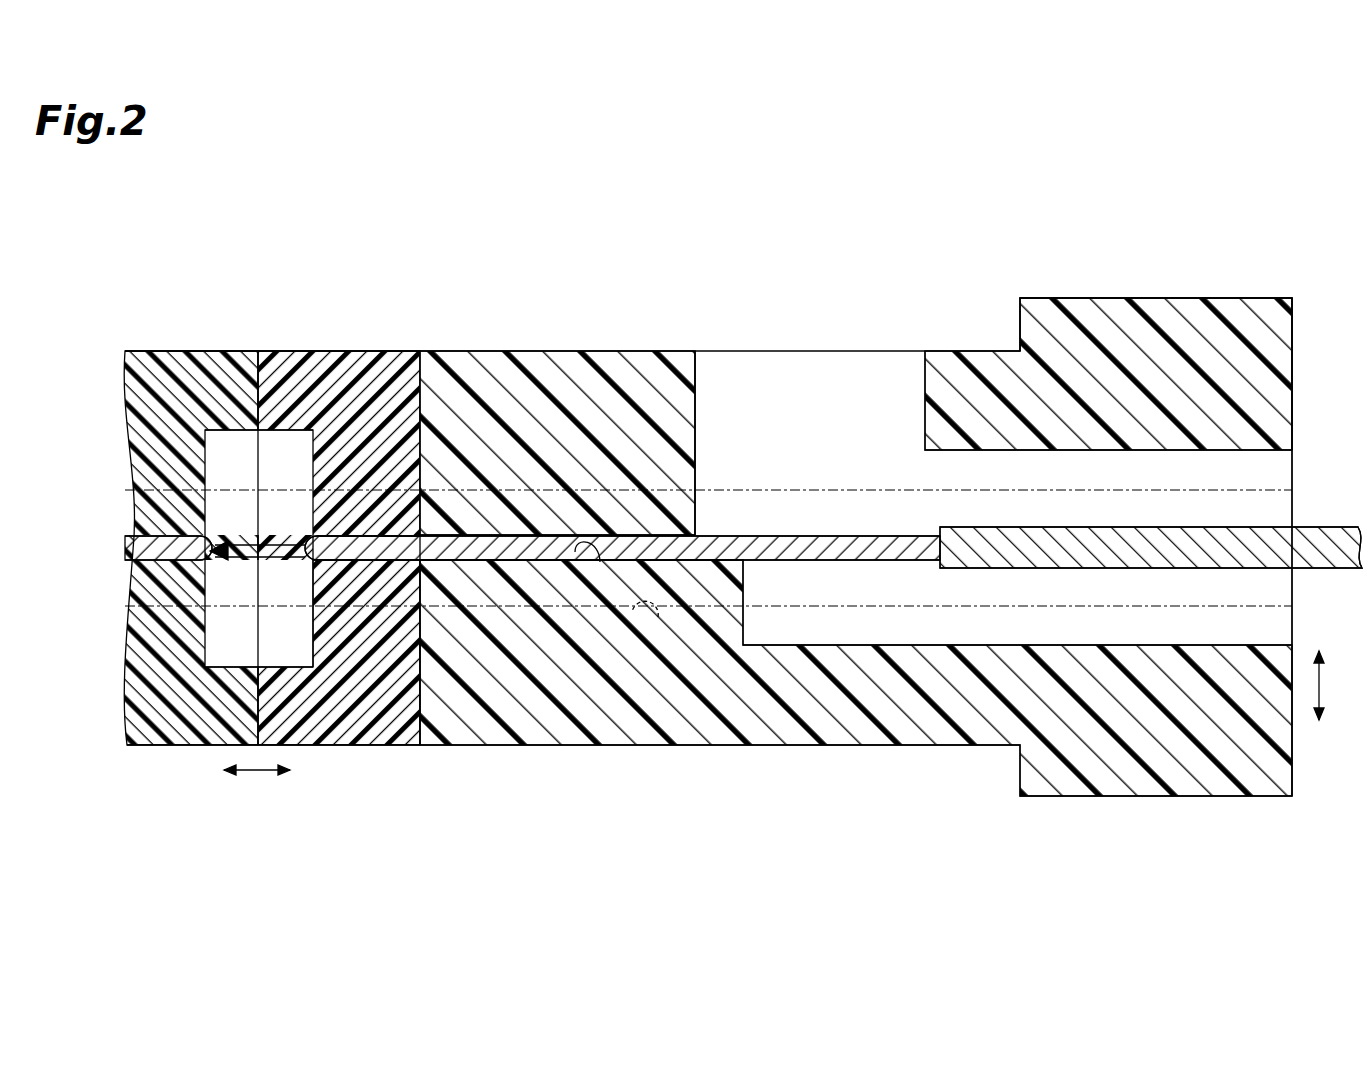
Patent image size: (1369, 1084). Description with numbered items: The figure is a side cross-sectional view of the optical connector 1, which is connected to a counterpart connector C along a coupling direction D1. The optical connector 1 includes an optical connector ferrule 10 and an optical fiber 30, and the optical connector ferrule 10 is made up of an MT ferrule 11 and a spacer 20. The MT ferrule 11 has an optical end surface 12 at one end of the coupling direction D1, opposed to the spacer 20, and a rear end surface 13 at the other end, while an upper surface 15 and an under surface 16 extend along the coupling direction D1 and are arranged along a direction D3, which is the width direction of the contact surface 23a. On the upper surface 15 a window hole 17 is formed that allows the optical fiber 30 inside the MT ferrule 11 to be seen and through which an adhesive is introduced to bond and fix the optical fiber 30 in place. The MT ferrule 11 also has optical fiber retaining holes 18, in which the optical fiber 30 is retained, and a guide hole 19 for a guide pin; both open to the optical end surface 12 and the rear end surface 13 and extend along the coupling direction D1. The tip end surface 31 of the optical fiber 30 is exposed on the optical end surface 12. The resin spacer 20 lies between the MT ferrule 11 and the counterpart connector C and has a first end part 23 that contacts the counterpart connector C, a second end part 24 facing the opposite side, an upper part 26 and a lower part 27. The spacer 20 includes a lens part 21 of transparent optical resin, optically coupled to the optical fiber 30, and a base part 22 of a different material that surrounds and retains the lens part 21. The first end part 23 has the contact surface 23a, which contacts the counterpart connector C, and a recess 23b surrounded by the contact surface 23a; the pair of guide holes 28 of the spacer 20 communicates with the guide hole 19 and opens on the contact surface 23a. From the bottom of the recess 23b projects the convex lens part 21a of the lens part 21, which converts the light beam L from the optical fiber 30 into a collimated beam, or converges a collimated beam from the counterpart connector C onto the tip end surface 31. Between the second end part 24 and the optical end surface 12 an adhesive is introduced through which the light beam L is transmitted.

The optical connector 1 is at (1154, 230).
The optical connector ferrule 10 is at (548, 293).
The MT ferrule 11 is at (570, 362).
The optical end surface 12 is at (400, 388).
The rear end surface 13 is at (1294, 316).
The upper surface 15 is at (695, 350).
The under surface 16 is at (733, 748).
The window hole 17 is at (925, 390).
The optical fiber retaining hole 18 is at (600, 562).
The guide hole 19 is at (657, 617).
The spacer 20 is at (154, 344).
The lens part 21 is at (365, 532).
The convex lens part 21a is at (240, 560).
The base part 22 is at (387, 590).
The first end part 23 is at (294, 728).
The contact surface 23a is at (252, 392).
The recess 23b is at (305, 652).
The second end part 24 is at (430, 708).
The upper part 26 is at (325, 350).
The lower part 27 is at (208, 350).
The guide hole 28 is at (397, 565).
The optical fiber 30 is at (729, 528).
The tip end surface 31 is at (440, 690).
The light beam L is at (300, 545).
The counterpart connector C is at (164, 268).
The coupling direction D1 is at (257, 787).
The direction D3 is at (1340, 685).